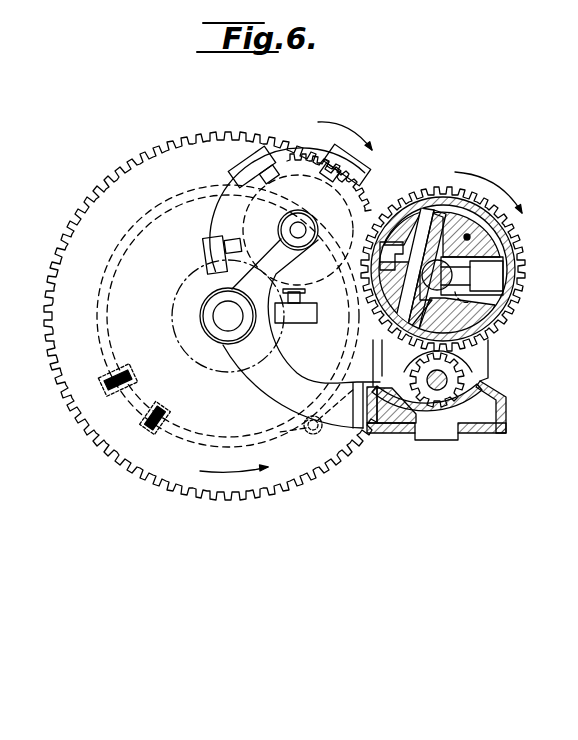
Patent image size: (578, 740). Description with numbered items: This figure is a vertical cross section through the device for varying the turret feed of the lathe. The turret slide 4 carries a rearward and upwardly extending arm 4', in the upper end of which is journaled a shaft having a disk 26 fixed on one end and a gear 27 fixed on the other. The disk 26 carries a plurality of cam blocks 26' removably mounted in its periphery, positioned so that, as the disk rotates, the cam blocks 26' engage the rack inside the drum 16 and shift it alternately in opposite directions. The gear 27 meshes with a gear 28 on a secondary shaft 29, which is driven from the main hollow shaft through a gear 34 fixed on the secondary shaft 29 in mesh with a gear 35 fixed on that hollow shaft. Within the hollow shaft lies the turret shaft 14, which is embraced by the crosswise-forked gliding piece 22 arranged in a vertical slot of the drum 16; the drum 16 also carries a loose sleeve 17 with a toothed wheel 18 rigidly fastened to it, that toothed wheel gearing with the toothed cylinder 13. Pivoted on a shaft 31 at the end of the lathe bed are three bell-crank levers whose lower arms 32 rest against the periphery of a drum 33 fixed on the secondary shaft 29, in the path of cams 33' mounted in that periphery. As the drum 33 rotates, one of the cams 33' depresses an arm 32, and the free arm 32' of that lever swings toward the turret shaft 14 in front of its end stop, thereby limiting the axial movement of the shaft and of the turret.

The turret slide 4 is at (457, 410).
The arm of turret slide 4' is at (301, 333).
The toothed cylinder 13 is at (460, 380).
The turret shaft 14 is at (486, 255).
The drum 16 is at (449, 261).
The loose sleeve 17 is at (440, 212).
The toothed wheel 18 is at (410, 197).
The gliding piece 22 is at (480, 289).
The disk 26 is at (212, 242).
The cam blocks 26' is at (318, 230).
The gear 27 is at (300, 190).
The gear 28 is at (190, 282).
The secondary shaft 29 is at (228, 316).
The shaft 31 is at (407, 395).
The lower arms of bell-crank levers 32 is at (332, 432).
The free arm of bell-crank lever 32' is at (512, 302).
The drum 33 is at (228, 316).
The cams 33' is at (133, 447).
The gear 34 is at (218, 463).
The gear 35 is at (508, 258).